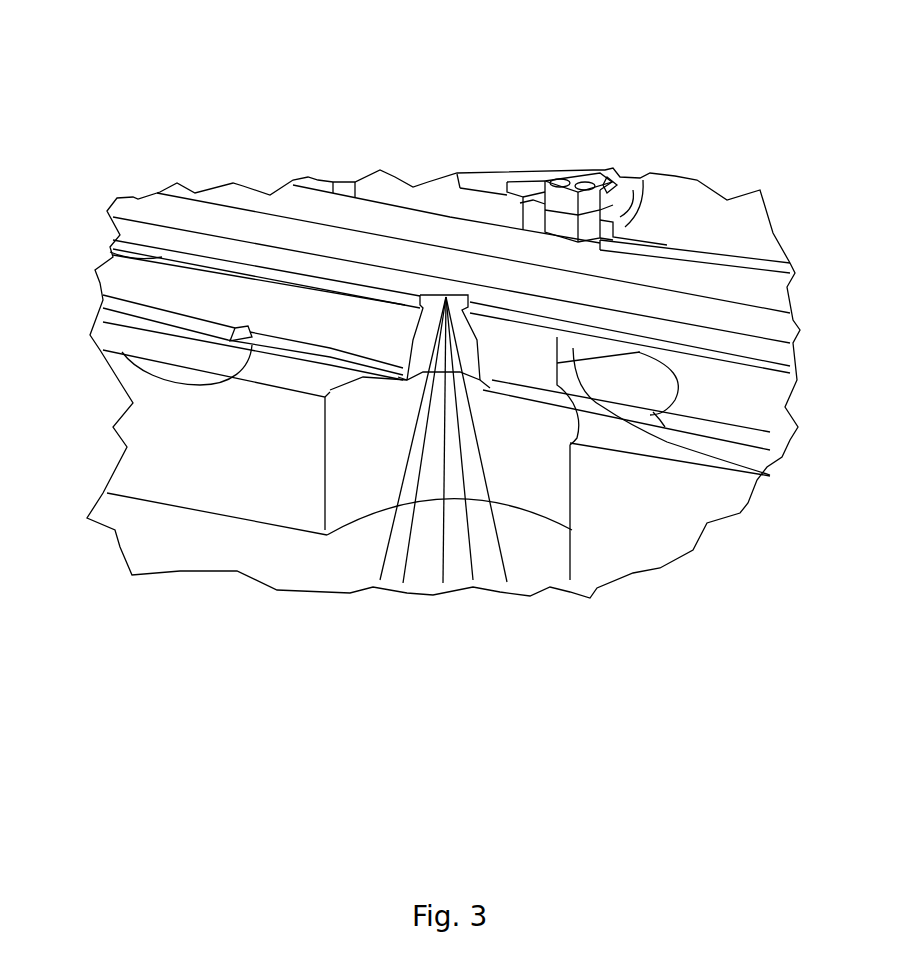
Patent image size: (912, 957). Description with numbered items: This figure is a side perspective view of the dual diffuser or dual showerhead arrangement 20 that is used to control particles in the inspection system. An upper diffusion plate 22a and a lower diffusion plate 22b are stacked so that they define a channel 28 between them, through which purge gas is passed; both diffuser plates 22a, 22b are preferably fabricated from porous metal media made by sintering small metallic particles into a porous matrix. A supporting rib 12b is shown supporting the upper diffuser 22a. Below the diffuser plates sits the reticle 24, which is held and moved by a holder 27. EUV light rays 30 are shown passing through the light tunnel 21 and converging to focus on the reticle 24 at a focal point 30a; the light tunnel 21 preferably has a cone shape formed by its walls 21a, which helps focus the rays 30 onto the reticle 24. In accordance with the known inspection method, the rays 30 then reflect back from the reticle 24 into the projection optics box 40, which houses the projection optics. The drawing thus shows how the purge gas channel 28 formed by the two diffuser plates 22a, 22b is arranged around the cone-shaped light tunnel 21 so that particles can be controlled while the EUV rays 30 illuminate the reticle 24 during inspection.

The dual diffuser or dual showerhead arrangement 20 is at (157, 62).
The light tunnel 21 is at (400, 348).
The walls 21a is at (410, 348).
The focal point 30a is at (442, 293).
The upper diffusion plate 22a is at (113, 253).
The lower diffusion plate 22b is at (103, 351).
The channel 28 is at (177, 285).
The reticle 24 is at (660, 310).
The holder 27 is at (692, 223).
The projection optics box 40 is at (172, 545).
The EUV light rays 30 is at (385, 548).
The supporting rib 12b is at (773, 467).